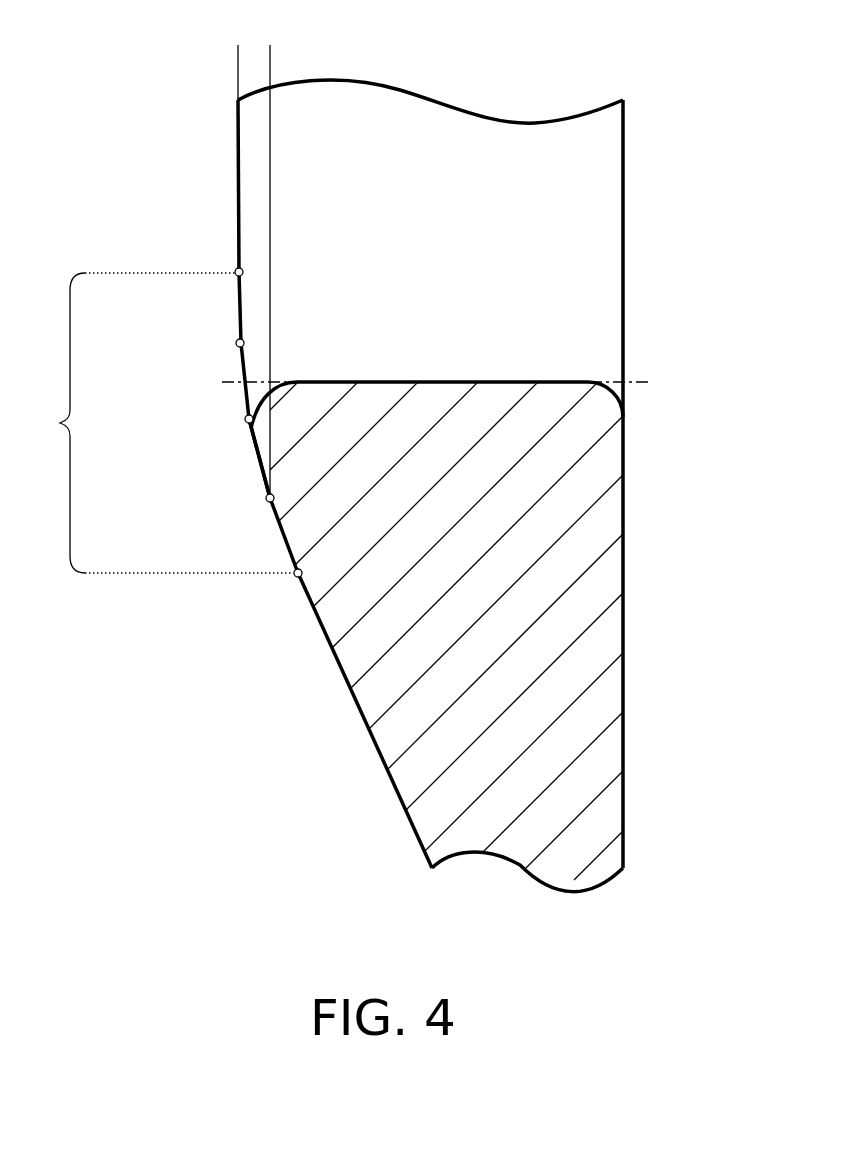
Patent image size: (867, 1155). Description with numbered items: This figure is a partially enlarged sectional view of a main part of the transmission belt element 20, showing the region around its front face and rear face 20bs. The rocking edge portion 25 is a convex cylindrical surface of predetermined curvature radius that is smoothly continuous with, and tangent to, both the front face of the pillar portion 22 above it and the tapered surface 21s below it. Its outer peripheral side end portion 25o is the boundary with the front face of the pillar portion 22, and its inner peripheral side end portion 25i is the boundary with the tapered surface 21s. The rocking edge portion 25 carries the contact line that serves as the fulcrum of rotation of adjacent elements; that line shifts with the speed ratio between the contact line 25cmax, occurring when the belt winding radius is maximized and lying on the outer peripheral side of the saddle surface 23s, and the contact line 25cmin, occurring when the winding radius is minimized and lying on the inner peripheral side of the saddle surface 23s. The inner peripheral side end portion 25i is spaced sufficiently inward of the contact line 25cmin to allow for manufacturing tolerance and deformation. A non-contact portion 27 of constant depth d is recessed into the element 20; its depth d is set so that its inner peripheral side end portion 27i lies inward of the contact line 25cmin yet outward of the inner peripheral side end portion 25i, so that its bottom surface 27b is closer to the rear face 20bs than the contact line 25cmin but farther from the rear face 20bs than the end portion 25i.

The element 20 is at (626, 781).
The rear face 20bs is at (623, 562).
The tapered surface 21s is at (330, 648).
The pillar portion 22 is at (257, 118).
The saddle surface 23s is at (470, 382).
The rocking edge portion 25 is at (158, 422).
The outer peripheral side end portion 25o is at (236, 272).
The inner peripheral side end portion 25i is at (296, 576).
The contact line 25cmax is at (240, 343).
The contact line 25cmin is at (249, 419).
The non-contact portion 27 is at (263, 417).
The bottom surface 27b is at (263, 440).
The inner peripheral side end portion 27i is at (268, 499).
The depth d is at (292, 57).